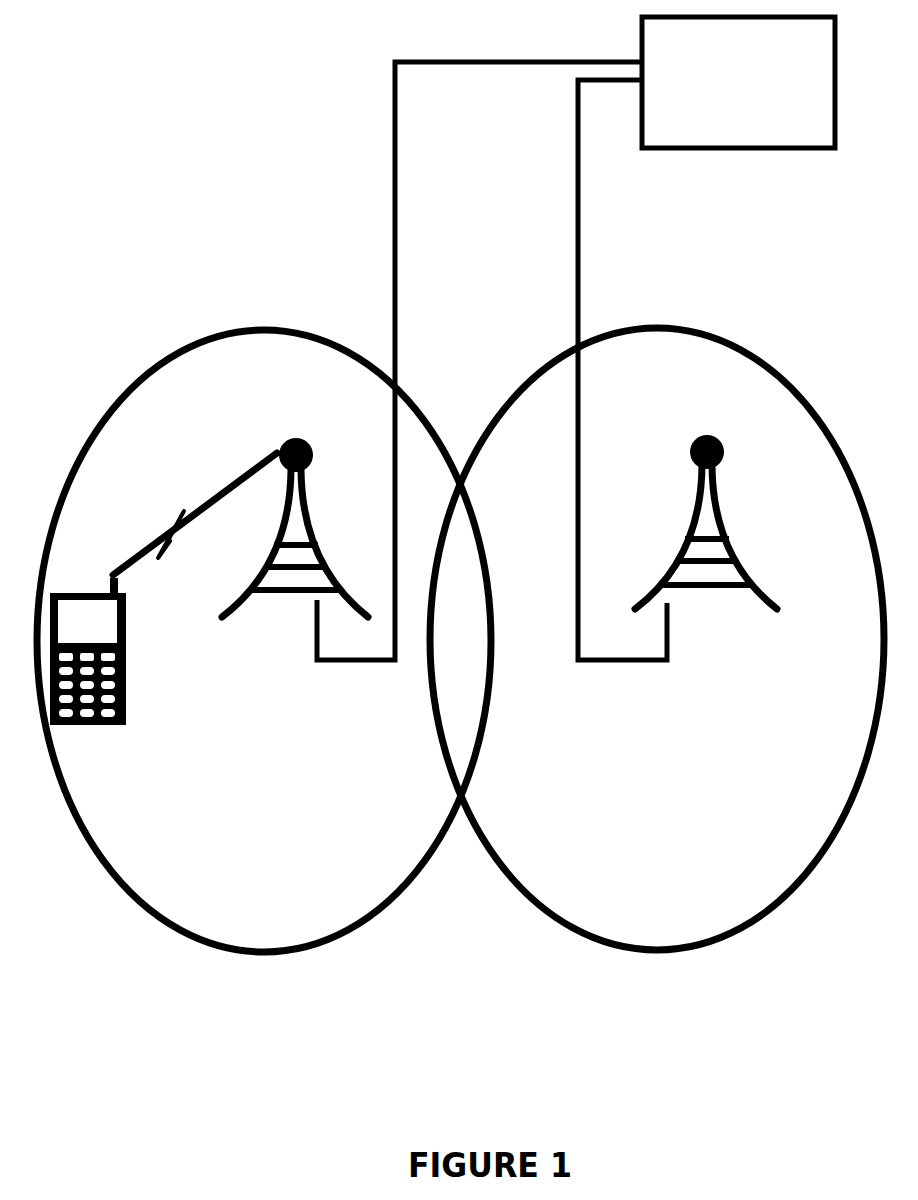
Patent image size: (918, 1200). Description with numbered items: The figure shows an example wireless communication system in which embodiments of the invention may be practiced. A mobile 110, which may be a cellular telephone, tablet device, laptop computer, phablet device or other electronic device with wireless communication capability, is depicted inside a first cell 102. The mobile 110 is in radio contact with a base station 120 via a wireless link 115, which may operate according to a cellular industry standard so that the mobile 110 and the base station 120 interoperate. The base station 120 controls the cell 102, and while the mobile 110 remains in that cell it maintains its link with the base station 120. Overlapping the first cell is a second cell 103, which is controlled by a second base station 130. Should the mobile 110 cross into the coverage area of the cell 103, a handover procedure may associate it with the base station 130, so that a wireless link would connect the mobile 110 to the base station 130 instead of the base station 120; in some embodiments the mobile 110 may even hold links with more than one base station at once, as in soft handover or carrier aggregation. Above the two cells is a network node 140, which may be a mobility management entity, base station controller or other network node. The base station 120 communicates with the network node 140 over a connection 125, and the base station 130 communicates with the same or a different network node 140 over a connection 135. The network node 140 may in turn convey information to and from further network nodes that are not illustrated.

The cell 102 is at (264, 641).
The cell 103 is at (657, 639).
The mobile 110 is at (88, 668).
The wireless link 115 is at (165, 527).
The base station 120 is at (295, 539).
The connection 125 is at (395, 242).
The base station 130 is at (706, 538).
The connection 135 is at (578, 232).
The network node 140 is at (738, 82).